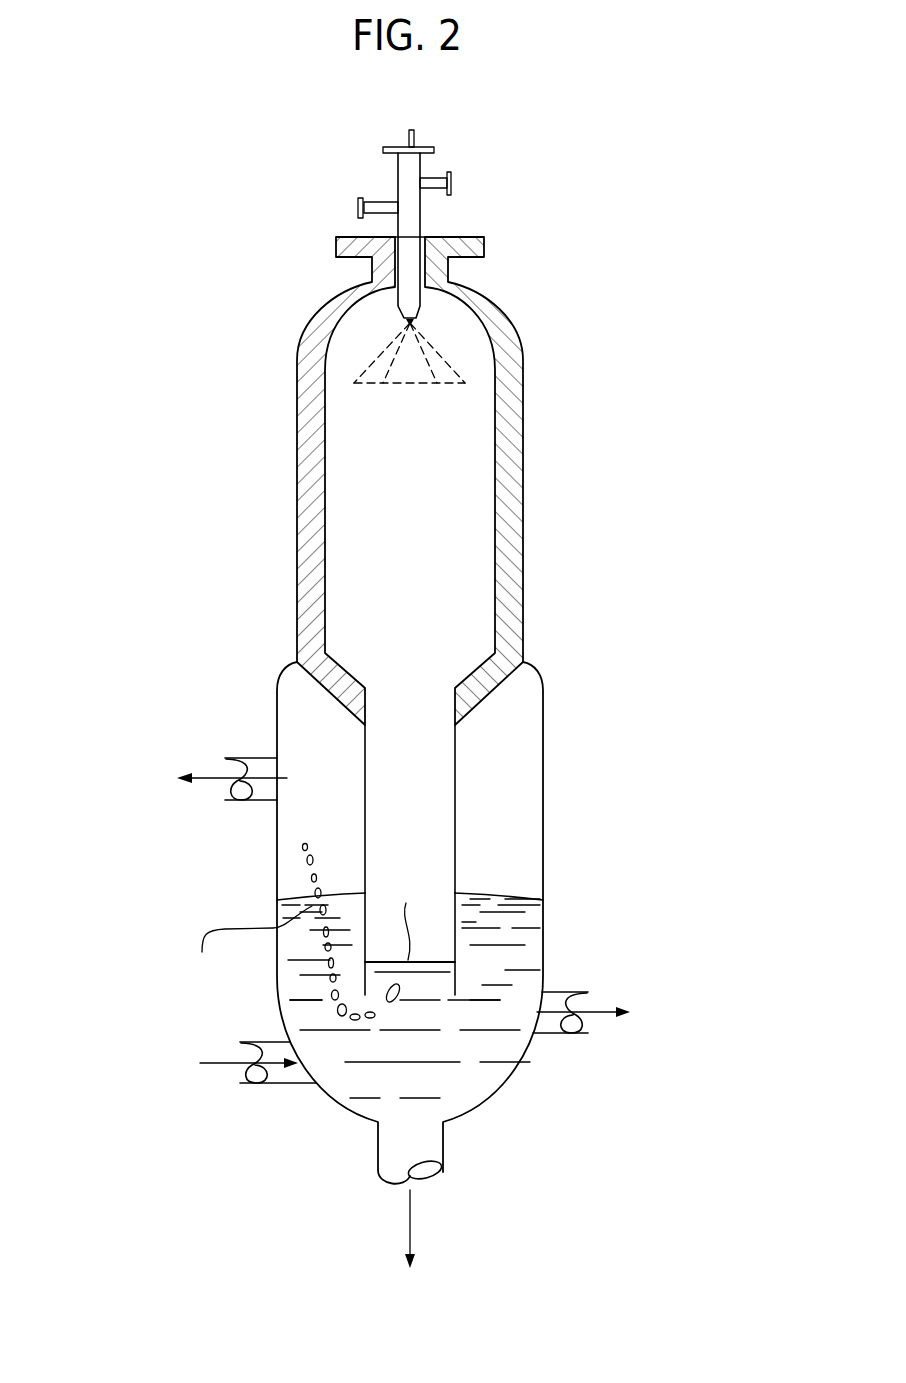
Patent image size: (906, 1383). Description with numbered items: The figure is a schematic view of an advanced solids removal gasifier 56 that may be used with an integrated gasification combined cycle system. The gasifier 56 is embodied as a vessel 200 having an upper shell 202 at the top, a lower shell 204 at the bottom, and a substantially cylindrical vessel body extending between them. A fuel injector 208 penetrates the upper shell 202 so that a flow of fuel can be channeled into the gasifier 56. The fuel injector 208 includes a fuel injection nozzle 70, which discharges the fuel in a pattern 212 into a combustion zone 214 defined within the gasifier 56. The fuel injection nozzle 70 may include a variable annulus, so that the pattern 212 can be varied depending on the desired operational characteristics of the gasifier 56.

The gasifier 56 is at (238, 292).
The fuel injection nozzle 70 is at (404, 272).
The vessel 200 is at (519, 262).
The upper shell 202 is at (511, 378).
The lower shell 204 is at (503, 1082).
The fuel injector 208 is at (409, 108).
The pattern 212 is at (437, 349).
The combustion zone 214 is at (428, 426).